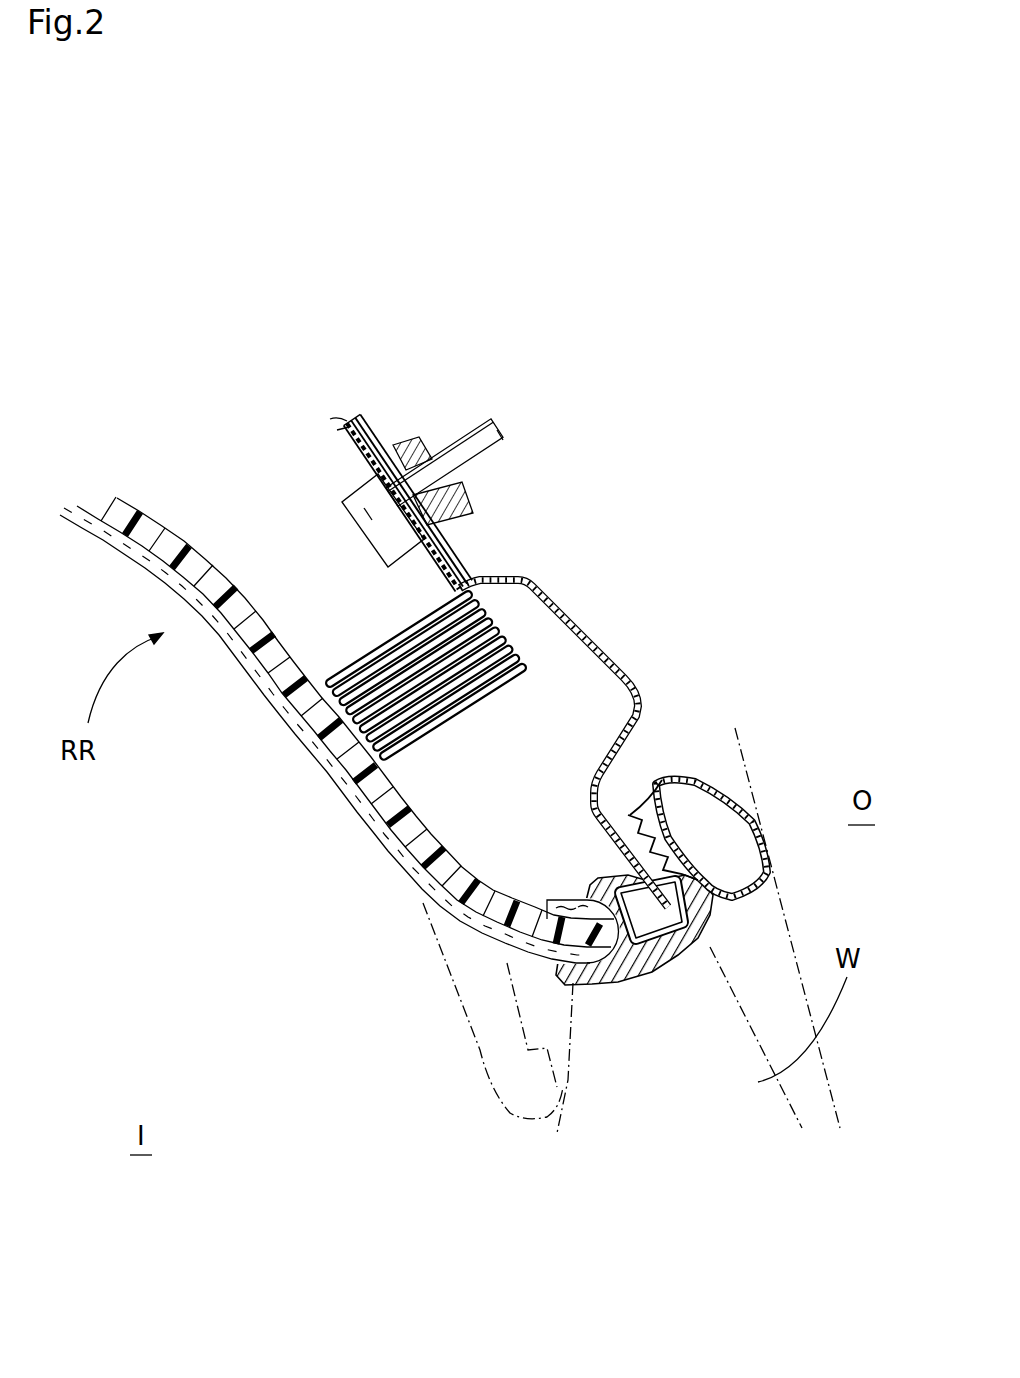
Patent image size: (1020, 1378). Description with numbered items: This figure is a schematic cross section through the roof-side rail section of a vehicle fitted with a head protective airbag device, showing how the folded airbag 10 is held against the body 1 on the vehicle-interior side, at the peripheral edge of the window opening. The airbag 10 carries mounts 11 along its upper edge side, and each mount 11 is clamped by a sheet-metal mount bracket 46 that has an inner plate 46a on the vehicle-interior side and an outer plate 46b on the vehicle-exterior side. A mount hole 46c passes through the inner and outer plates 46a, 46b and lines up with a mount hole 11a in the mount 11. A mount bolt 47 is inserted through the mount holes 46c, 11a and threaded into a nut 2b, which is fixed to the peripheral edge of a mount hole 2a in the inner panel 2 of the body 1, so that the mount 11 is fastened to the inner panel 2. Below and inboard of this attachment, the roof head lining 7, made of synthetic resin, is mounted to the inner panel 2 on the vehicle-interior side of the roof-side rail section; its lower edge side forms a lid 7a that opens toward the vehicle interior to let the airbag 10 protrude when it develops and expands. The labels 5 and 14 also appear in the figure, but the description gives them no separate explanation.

The body 1 is at (569, 617).
The inner panel 2 is at (528, 617).
The mount hole 2a is at (470, 427).
The nut 2b is at (412, 437).
The panel flange 5 is at (403, 1009).
The roof head lining 7 is at (268, 655).
The lid 7a is at (547, 905).
The airbag 10 is at (540, 1032).
The mounts 11 is at (467, 560).
The mount hole 11a is at (368, 512).
The weather strip 14 is at (554, 1126).
The mount bracket 46 is at (354, 414).
The inner plate 46a is at (362, 460).
The outer plate 46b is at (373, 445).
The mount hole 46c is at (372, 520).
The mount bolt 47 is at (503, 448).